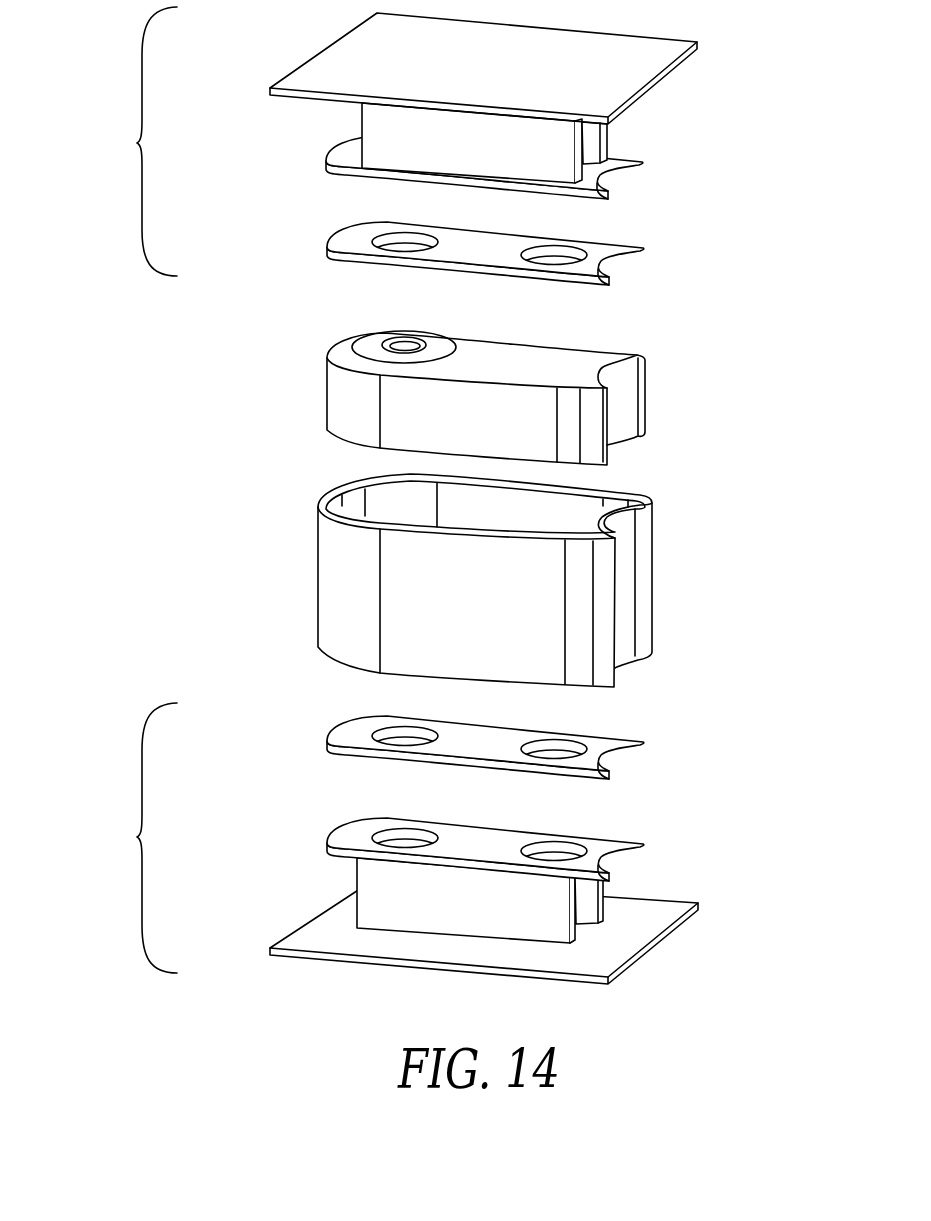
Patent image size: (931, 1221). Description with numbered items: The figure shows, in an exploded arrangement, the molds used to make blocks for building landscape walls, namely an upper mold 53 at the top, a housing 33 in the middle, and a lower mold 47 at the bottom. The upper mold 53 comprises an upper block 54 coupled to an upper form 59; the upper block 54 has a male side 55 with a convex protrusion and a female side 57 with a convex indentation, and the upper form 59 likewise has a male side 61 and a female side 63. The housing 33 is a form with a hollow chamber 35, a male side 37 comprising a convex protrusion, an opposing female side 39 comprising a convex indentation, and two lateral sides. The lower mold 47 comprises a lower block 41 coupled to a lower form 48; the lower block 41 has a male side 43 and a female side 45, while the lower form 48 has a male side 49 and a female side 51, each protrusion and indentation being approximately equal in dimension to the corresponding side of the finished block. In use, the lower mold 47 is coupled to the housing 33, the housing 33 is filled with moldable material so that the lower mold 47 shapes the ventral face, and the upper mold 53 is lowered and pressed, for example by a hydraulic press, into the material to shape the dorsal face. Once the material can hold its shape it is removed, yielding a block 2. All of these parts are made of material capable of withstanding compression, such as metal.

The upper mold 53 is at (137, 143).
The upper block 54 is at (241, 85).
The male side 55 is at (326, 161).
The female side 57 is at (645, 167).
The male side 61 is at (326, 247).
The female side 63 is at (645, 250).
The upper form 59 is at (692, 269).
The block 2 is at (274, 387).
The hollow chamber 35 is at (567, 513).
The male side 37 is at (318, 507).
The female side 39 is at (620, 525).
The housing 33 is at (676, 618).
The lower mold 47 is at (137, 837).
The lower form 48 is at (270, 732).
The male side 49 is at (327, 742).
The female side 51 is at (627, 753).
The male side 43 is at (327, 844).
The female side 45 is at (630, 851).
The lower block 41 is at (693, 890).